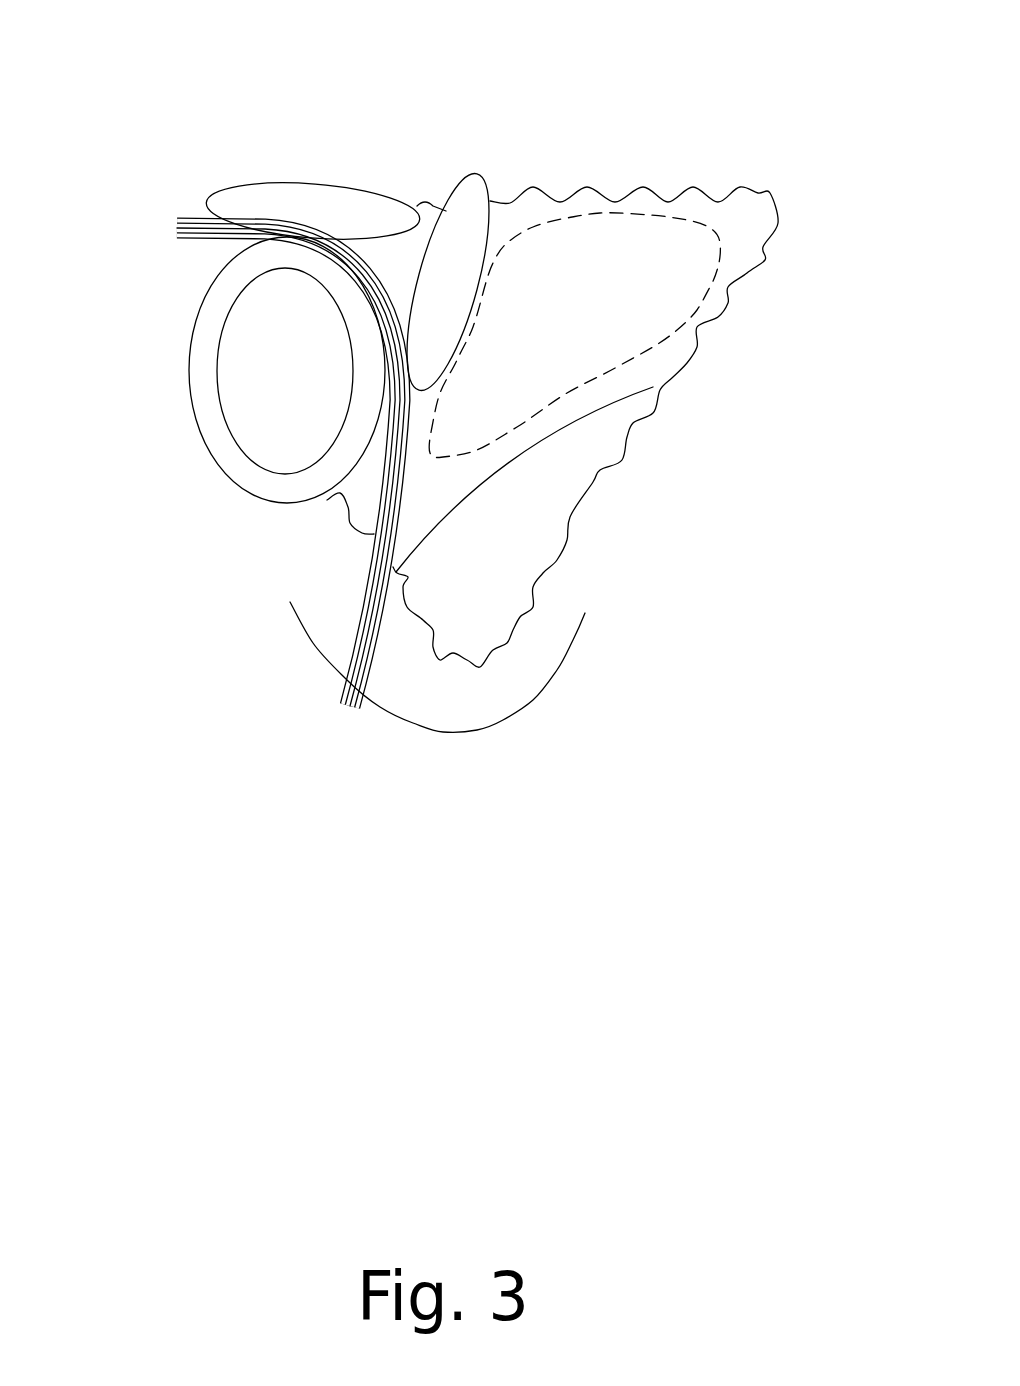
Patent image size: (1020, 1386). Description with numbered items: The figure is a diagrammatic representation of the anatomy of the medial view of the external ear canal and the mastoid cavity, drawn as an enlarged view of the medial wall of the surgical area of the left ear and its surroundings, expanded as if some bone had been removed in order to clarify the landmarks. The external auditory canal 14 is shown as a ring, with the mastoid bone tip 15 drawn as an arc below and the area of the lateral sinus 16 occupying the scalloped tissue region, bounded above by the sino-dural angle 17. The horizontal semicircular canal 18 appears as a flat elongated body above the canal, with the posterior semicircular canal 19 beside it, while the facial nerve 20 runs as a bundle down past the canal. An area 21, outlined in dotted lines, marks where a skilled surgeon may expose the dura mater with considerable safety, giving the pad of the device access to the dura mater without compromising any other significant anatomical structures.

The external auditory canal 14 is at (217, 452).
The mastoid bone tip 15 is at (503, 721).
The area of the lateral sinus 16 is at (495, 532).
The sino-dural angle 17 is at (740, 230).
The horizontal semicircular canal 18 is at (285, 213).
The posterior semicircular canal 19 is at (463, 222).
The facial nerve 20 is at (357, 622).
The area 21 is at (622, 320).